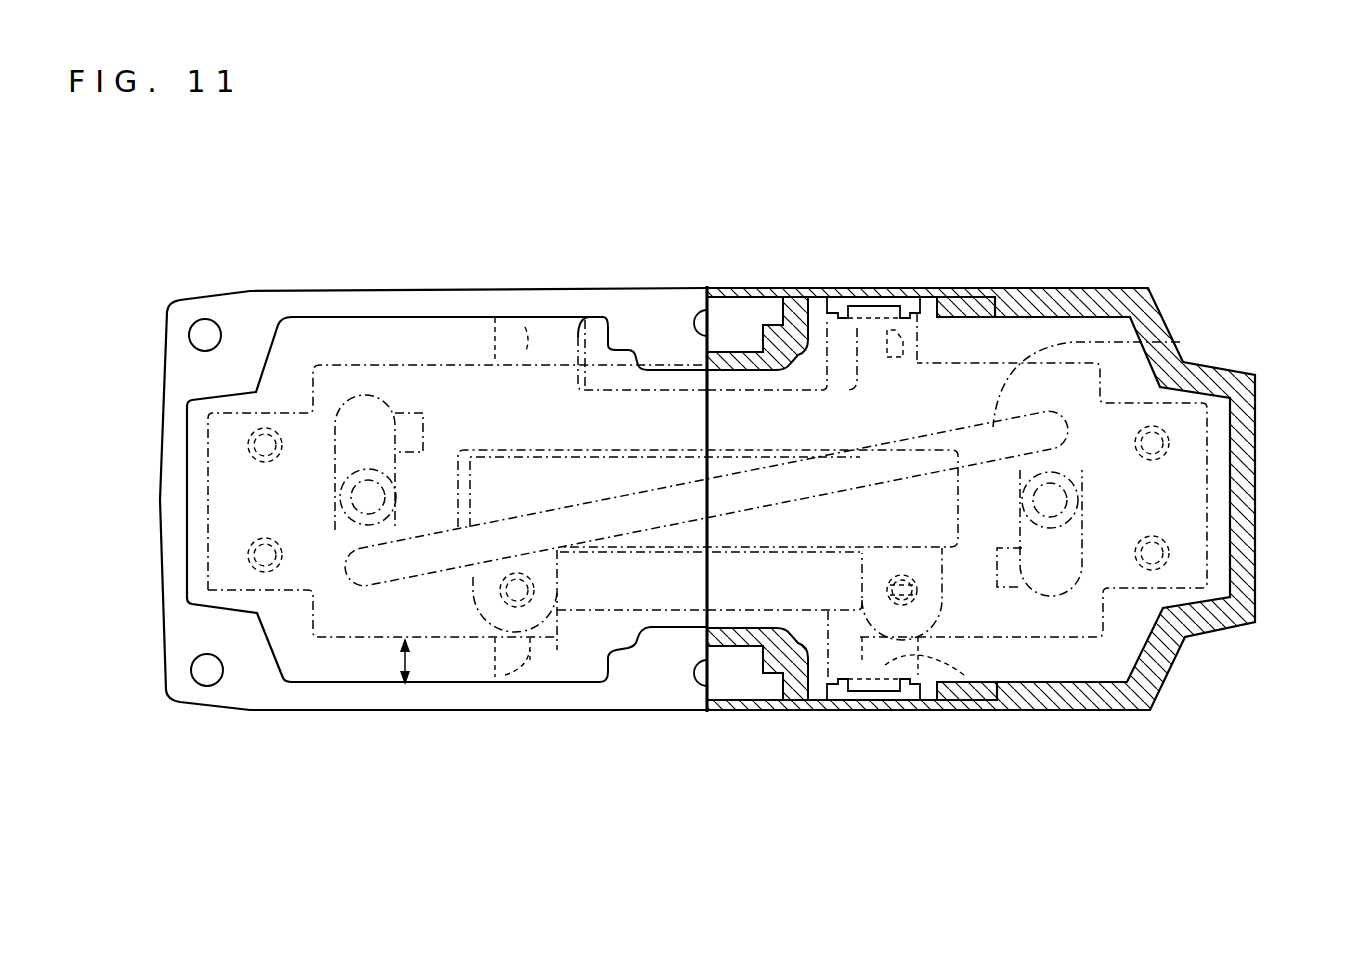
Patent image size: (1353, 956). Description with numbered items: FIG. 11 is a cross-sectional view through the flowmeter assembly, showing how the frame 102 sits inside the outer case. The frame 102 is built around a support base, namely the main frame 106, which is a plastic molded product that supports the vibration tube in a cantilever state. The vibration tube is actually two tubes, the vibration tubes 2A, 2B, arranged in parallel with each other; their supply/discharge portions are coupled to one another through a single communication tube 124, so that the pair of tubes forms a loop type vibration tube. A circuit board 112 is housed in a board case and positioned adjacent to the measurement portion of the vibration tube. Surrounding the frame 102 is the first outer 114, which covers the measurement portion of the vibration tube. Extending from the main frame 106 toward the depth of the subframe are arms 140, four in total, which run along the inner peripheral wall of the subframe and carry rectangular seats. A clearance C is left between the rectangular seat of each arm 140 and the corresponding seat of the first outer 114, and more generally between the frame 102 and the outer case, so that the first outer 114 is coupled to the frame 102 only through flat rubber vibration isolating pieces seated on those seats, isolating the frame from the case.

The vibration tube 2A is at (357, 427).
The vibration tube 2B is at (1062, 547).
The frame 102 is at (390, 375).
The main frame 106 is at (957, 520).
The circuit board 112 is at (517, 480).
The first outer 114 is at (1057, 300).
The communication tube 124 is at (1180, 342).
The arm 140 is at (575, 345).
The clearance C is at (415, 662).